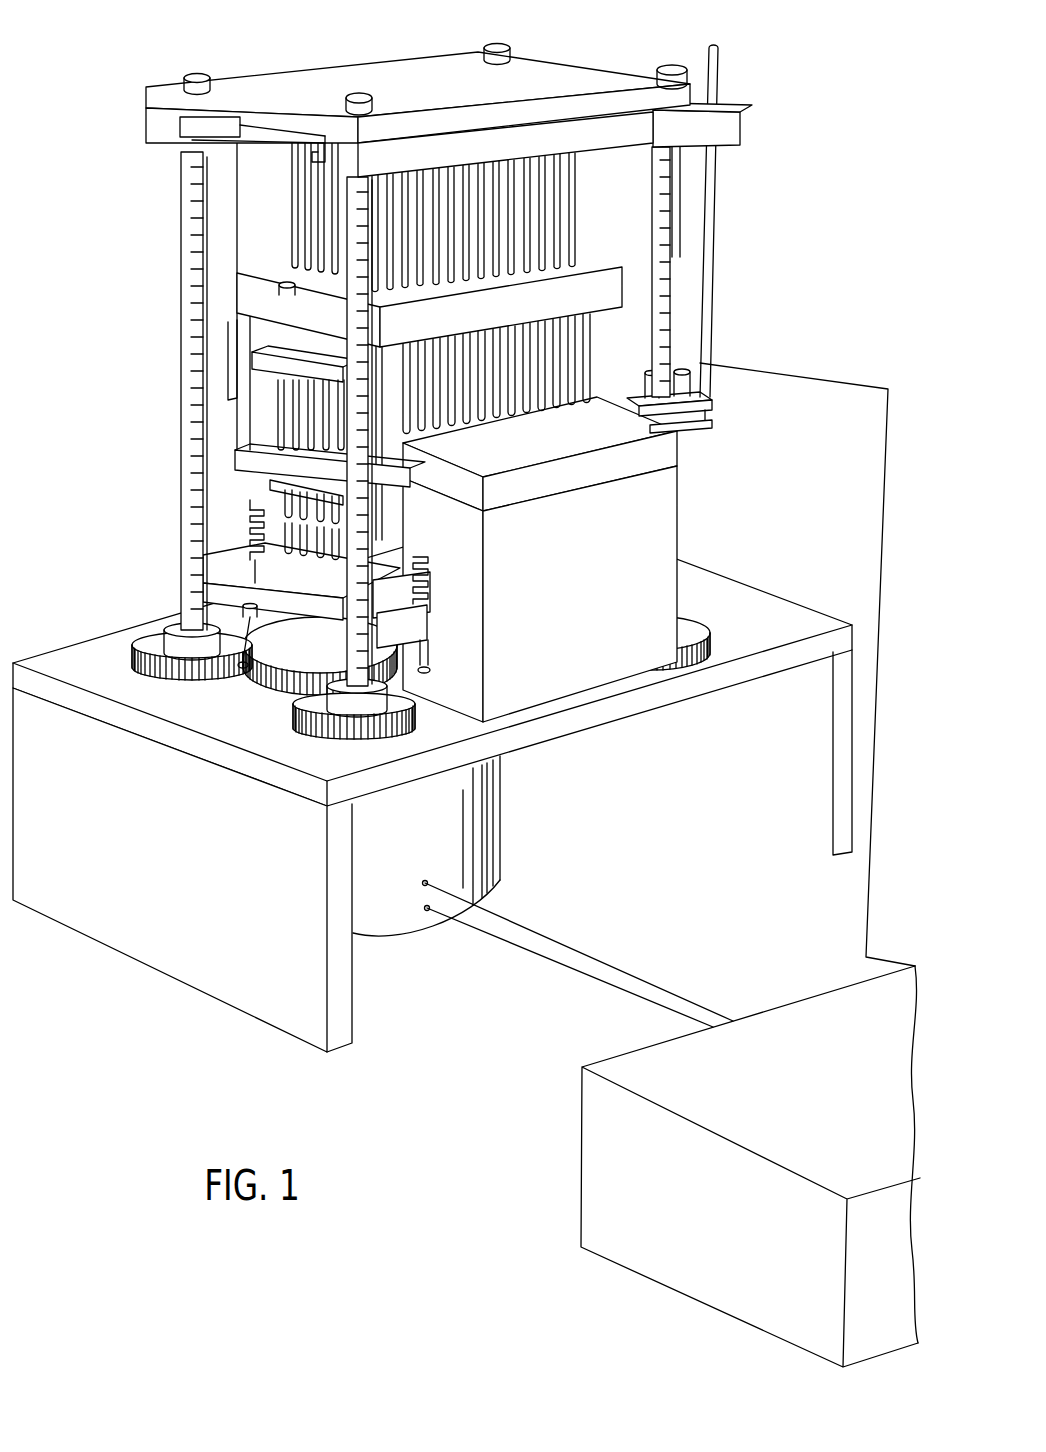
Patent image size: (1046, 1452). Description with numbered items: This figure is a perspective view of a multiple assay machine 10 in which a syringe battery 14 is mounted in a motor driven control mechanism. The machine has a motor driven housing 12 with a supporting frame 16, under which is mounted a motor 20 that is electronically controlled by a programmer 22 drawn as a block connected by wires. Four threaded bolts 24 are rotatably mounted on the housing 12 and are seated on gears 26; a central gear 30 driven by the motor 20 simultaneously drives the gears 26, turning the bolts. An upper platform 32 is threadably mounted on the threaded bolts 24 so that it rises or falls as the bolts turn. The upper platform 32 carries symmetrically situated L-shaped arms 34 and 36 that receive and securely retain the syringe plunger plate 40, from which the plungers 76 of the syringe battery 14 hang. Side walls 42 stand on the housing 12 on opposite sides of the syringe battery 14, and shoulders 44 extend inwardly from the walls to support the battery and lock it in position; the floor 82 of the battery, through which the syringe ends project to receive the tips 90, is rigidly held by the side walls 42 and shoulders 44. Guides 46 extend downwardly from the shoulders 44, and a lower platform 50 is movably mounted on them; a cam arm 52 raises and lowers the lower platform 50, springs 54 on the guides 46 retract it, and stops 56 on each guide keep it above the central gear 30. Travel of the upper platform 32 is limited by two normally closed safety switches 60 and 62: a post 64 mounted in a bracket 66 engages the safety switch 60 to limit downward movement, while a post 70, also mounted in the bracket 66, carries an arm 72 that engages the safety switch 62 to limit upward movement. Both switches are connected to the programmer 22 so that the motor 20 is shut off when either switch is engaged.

The multiple assay machine 10 is at (158, 430).
The motor driven housing 12 is at (770, 607).
The syringe battery 14 is at (607, 272).
The supporting frame 16 is at (845, 624).
The motor 20 is at (505, 822).
The programmer 22 is at (590, 1112).
The threaded bolts 24 is at (182, 273).
The gears 26 is at (705, 632).
The central gear 30 is at (290, 688).
The upper platform 32 is at (392, 117).
The L-shaped arm 34 is at (160, 127).
The L-shaped arm 36 is at (322, 163).
The syringe plunger plate 40 is at (270, 133).
The side walls 42 is at (561, 559).
The shoulders 44 is at (545, 438).
The guides 46 is at (430, 643).
The lower platform 50 is at (313, 610).
The cam arm 52 is at (225, 385).
The springs 54 is at (430, 580).
The stops 56 is at (425, 675).
The safety switch 60 is at (693, 424).
The safety switch 62 is at (692, 380).
The post 64 is at (672, 237).
The bracket 66 is at (738, 127).
The post 70 is at (712, 170).
The arm 72 is at (693, 445).
The plungers 76 is at (302, 236).
The floor 82 is at (235, 455).
The tips 90 is at (270, 485).